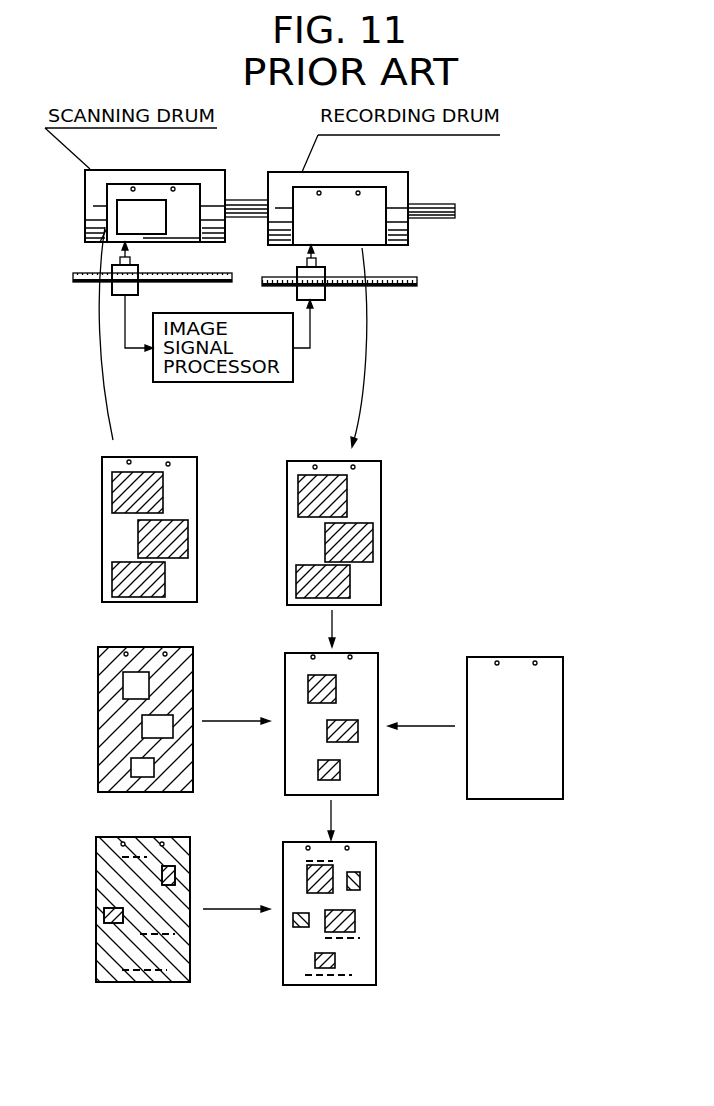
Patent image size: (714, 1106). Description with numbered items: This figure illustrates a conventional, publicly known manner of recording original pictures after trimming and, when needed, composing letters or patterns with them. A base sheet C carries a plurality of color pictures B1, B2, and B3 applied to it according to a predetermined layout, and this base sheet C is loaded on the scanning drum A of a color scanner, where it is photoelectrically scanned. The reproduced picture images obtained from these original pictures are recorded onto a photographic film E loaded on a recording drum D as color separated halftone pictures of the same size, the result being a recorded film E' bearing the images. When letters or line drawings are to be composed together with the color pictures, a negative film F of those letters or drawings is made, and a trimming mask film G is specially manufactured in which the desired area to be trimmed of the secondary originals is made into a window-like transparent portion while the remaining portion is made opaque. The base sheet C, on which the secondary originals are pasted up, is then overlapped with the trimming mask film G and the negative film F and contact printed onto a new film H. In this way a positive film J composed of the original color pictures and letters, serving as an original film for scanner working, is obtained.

The scanning drum A is at (203, 177).
The color picture B1 is at (205, 491).
The color picture B2 is at (187, 243).
The color picture B3 is at (165, 582).
The base sheet C is at (155, 184).
The recording drum D is at (397, 187).
The photographic film E is at (349, 231).
The recorded film with images E' is at (356, 533).
The trimming mask film G is at (98, 740).
The new film H is at (377, 796).
The negative film F is at (96, 952).
The positive film J is at (376, 960).